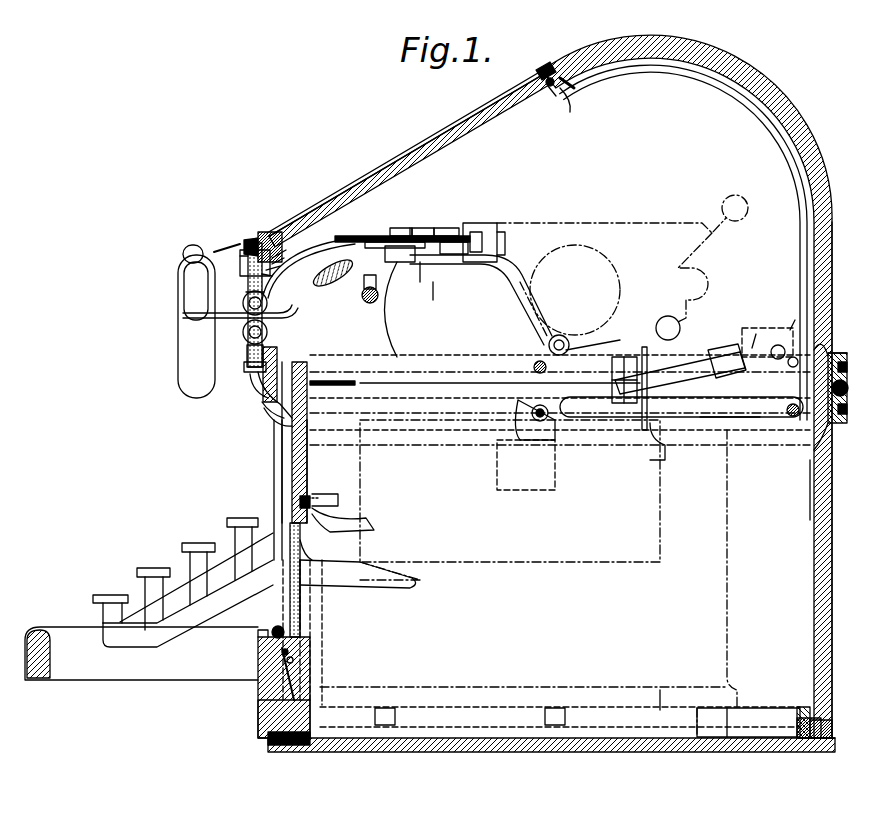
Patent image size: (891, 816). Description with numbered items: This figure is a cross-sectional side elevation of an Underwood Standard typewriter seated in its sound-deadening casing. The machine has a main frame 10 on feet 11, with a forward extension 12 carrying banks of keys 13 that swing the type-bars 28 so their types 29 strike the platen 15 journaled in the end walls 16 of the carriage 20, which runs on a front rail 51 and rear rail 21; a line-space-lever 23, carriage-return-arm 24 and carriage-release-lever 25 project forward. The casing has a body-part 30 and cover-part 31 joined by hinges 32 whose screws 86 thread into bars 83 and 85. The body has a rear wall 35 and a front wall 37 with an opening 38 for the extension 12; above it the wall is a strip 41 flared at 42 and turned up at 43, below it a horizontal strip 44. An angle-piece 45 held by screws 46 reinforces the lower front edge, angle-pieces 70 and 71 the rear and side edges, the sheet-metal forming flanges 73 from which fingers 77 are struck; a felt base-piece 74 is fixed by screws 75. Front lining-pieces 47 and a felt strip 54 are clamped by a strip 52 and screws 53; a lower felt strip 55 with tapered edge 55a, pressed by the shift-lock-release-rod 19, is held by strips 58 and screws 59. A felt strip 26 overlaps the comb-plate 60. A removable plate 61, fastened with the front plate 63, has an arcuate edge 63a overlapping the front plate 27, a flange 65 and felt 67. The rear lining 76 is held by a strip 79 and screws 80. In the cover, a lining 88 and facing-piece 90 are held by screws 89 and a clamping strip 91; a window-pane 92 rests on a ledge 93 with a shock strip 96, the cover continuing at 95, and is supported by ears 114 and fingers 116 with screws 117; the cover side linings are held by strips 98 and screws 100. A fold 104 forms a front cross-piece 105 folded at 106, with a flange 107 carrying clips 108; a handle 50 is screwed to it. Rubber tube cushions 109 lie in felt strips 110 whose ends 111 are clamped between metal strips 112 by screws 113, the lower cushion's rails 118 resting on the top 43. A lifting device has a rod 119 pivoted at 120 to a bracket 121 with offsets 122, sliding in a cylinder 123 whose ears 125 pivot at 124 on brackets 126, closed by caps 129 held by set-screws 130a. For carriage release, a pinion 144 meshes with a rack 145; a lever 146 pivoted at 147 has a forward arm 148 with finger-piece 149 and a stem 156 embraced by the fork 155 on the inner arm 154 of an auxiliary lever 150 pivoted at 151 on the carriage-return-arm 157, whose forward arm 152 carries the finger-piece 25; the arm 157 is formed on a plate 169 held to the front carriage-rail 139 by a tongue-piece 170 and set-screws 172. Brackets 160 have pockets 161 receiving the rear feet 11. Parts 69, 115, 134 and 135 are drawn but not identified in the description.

The cash drawer 10 is at (728, 600).
The drawer side 11 is at (338, 684).
The base 12 is at (177, 676).
The keys 13 is at (182, 545).
The gear wheel 15 is at (620, 275).
The lever profile 16 is at (572, 224).
The pivot pin 19 is at (274, 628).
The link 20 is at (436, 292).
The roller 21 is at (680, 326).
The handle 23 is at (180, 378).
The handle cap 24 is at (186, 250).
The handle grip 25 is at (186, 284).
The spring 26 is at (298, 670).
The latch 27 is at (310, 496).
The latch lever 28 is at (340, 530).
The latch block 29 is at (338, 492).
The casing side wall 30 is at (832, 548).
The casing wall 31 is at (832, 246).
The knob 32 is at (850, 384).
The casing lower wall 35 is at (832, 604).
The plate 37 is at (274, 478).
The guide 38 is at (290, 540).
The bracket 41 is at (266, 418).
The bracket arm 42 is at (258, 411).
The link 43 is at (250, 382).
The notch 44 is at (258, 642).
The lower block 45 is at (264, 714).
The foot 46 is at (268, 738).
The guide rod 47 is at (314, 620).
The pin 50 is at (223, 243).
The pivot 51 is at (368, 303).
The post 52 is at (278, 350).
The chain link 53 is at (248, 352).
The arm 54 is at (258, 392).
The block 55 is at (260, 660).
The block extension 55a is at (312, 622).
The pin 58 is at (322, 644).
The pin 59 is at (300, 646).
The key lever 60 is at (330, 586).
The wall plate 61 is at (282, 454).
The bar 63 is at (330, 380).
The bar extension 63a is at (290, 525).
The front wall 65 is at (306, 362).
The wall face 67 is at (308, 446).
The wall inner face 69 is at (300, 434).
The stop block 70 is at (832, 728).
The drawer bottom 71 is at (510, 688).
The stop 73 is at (808, 700).
The base plate 74 is at (598, 752).
The base plate end 75 is at (290, 752).
The casing inner face 76 is at (810, 492).
The roller 77 is at (400, 712).
The rod 79 is at (796, 418).
The bearing boss 80 is at (848, 400).
The boss lower end 83 is at (836, 434).
The boss upper end 85 is at (846, 354).
The screw 86 is at (848, 366).
The casing top 88 is at (822, 168).
The casing shoulder 89 is at (828, 342).
The casing liner 90 is at (770, 110).
The hinge 91 is at (576, 88).
The cover arm 92 is at (462, 140).
The hinge block 93 is at (540, 72).
The cover arm face 95 is at (380, 160).
The spring 96 is at (570, 112).
The cam 98 is at (436, 356).
The pivot pin 100 is at (534, 366).
The arm end 104 is at (278, 230).
The chain 105 is at (248, 280).
The block 106 is at (246, 240).
The pin 107 is at (281, 266).
The pin 108 is at (275, 277).
The sprocket 109 is at (248, 332).
The lever 110 is at (300, 318).
The link 111 is at (233, 257).
The sprocket 112 is at (248, 306).
The pin 113 is at (246, 294).
The pin 114 is at (286, 258).
The pin 115 is at (287, 250).
The pivot 116 is at (551, 88).
The pivot pin 117 is at (551, 103).
The block 118 is at (244, 368).
The pin 119 is at (760, 326).
The roller 120 is at (778, 344).
The arm 121 is at (794, 312).
The bracket 122 is at (746, 322).
The notch 123 is at (620, 420).
The bracket 124 is at (520, 424).
The pivot 125 is at (532, 412).
The plate 126 is at (497, 486).
The lever end 129 is at (720, 348).
The rod end 130a is at (742, 408).
The block 134 is at (490, 224).
The block face 135 is at (506, 240).
The block 139 is at (379, 284).
The slide block 144 is at (660, 382).
The plate 145 is at (642, 350).
The link 146 is at (518, 328).
The pivot 147 is at (548, 348).
The tube 148 is at (480, 290).
The plate 149 is at (446, 228).
The plate 150 is at (400, 236).
The plate 151 is at (384, 240).
The handle bar 152 is at (240, 318).
The plate 154 is at (428, 224).
The block 155 is at (460, 236).
The link 156 is at (418, 284).
The bar 157 is at (352, 232).
The drawer stop 160 is at (760, 708).
The stop face 161 is at (715, 714).
The pin 169 is at (410, 228).
The cam 170 is at (348, 278).
The block 172 is at (412, 262).